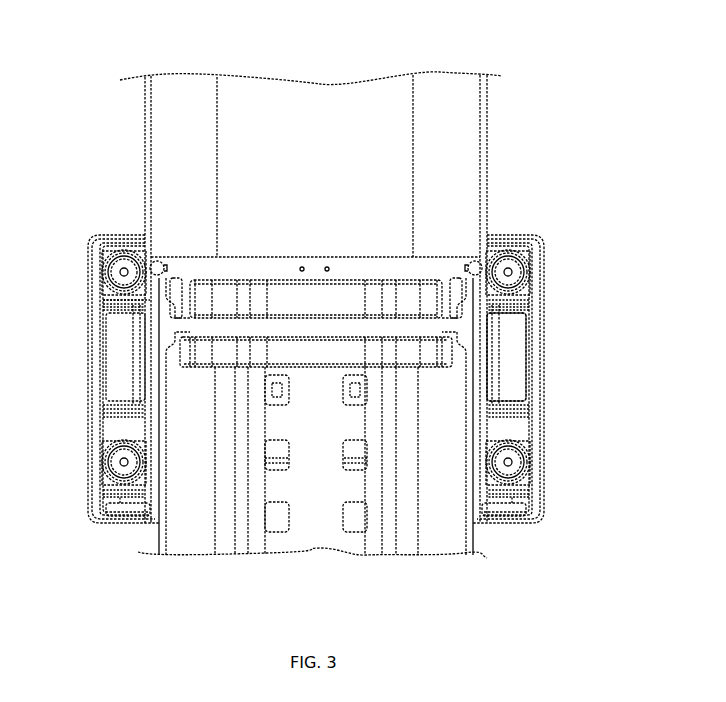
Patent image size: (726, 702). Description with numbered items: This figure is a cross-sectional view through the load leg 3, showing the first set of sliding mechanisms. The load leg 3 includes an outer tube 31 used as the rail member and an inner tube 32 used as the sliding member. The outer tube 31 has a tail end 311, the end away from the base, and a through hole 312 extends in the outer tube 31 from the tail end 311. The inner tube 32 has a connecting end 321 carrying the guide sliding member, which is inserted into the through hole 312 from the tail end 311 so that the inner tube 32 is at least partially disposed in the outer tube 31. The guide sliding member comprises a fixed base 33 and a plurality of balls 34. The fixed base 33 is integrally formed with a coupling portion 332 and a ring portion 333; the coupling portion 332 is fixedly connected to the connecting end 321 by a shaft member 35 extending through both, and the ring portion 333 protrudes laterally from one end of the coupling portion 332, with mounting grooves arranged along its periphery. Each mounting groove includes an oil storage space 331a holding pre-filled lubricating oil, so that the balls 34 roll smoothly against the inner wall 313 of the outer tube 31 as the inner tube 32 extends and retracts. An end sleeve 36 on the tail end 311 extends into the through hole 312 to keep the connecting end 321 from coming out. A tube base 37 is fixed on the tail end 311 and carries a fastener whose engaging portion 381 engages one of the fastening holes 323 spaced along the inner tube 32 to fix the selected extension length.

The load leg 3 is at (107, 90).
The outer tube 31 is at (489, 91).
The inner wall 313 is at (483, 122).
The through hole 312 is at (427, 160).
The tube base 37 is at (117, 240).
The balls 34 is at (145, 265).
The end sleeve 36 is at (150, 462).
The ring portion 333 is at (503, 237).
The oil storage space 331a is at (530, 257).
The engaging portion 381 is at (493, 458).
The tail end 311 is at (490, 382).
The shaft member 35 is at (202, 328).
The connecting end 321 is at (160, 297).
The fixed base 33 is at (400, 297).
The coupling portion 332 is at (443, 357).
The inner tube 32 is at (162, 535).
The fastening holes 323 is at (357, 517).